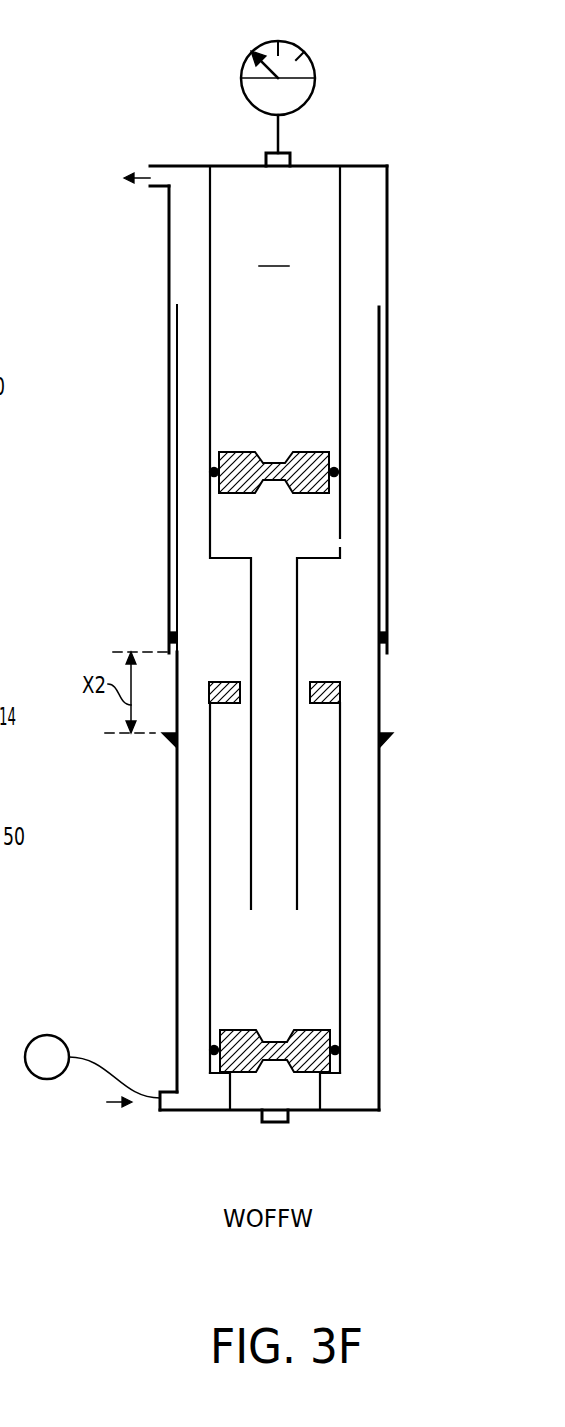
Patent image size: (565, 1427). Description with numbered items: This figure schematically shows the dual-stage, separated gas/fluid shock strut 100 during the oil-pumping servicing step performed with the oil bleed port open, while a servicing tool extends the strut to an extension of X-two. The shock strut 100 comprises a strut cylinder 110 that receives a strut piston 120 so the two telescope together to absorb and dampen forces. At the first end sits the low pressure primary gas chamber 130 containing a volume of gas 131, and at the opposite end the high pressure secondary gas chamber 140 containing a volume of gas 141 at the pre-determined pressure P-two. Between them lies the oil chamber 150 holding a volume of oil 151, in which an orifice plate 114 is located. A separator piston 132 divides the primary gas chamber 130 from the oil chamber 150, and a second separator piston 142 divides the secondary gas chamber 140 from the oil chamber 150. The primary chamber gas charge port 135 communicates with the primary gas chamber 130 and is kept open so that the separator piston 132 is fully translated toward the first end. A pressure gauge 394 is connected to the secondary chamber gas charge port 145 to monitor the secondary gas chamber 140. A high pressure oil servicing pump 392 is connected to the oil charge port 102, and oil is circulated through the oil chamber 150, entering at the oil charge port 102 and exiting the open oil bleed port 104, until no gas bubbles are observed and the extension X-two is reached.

The dual-stage, separated gas/fluid shock strut 100 is at (186, 110).
The oil charge port 102 is at (168, 1113).
The oil bleed port 104 is at (150, 166).
The strut cylinder 110 is at (168, 370).
The orifice plate 114 is at (340, 688).
The strut piston 120 is at (176, 984).
The primary gas chamber 130 is at (310, 1086).
The volume of gas 131 is at (293, 1100).
The separator piston 132 is at (328, 1022).
The primary chamber gas charge port 135 is at (275, 1126).
The secondary gas chamber 140 is at (337, 345).
The volume of gas 141 is at (292, 376).
The separator piston 142 is at (338, 458).
The secondary chamber gas charge port 145 is at (266, 153).
The oil chamber 150 is at (362, 790).
The volume of oil 151 is at (228, 614).
The high pressure oil servicing pump 392 is at (50, 1035).
The pressure gauge 394 is at (313, 56).